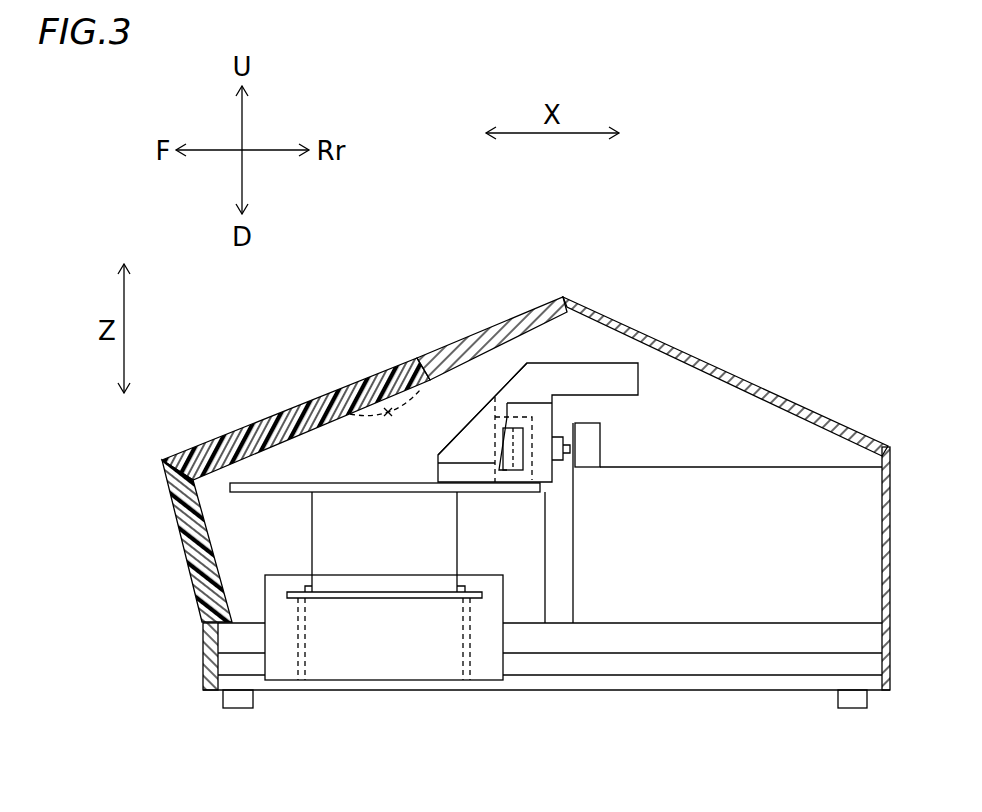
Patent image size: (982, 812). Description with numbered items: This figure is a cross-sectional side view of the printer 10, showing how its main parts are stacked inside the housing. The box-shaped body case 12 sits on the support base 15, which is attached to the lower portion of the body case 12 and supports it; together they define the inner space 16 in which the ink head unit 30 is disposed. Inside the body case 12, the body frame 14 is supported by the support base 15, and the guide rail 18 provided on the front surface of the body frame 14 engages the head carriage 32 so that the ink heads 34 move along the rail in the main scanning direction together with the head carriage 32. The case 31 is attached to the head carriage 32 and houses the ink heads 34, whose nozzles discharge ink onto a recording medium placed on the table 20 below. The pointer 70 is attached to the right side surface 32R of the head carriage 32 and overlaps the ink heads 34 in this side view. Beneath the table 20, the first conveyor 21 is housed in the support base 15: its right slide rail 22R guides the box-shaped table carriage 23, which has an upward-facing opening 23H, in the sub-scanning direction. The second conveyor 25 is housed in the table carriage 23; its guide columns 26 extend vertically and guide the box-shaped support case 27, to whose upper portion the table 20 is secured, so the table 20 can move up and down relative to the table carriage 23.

The printer 10 is at (768, 273).
The body case 12 is at (783, 391).
The body frame 14 is at (590, 430).
The support base 15 is at (205, 664).
The inner space 16 is at (332, 394).
The guide rail 18 is at (575, 424).
The table 20 is at (258, 482).
The first conveyor 21 is at (529, 680).
The right slide rail 22R is at (753, 663).
The table carriage 23 is at (262, 640).
The opening 23H is at (318, 588).
The second conveyor 25 is at (298, 530).
The guide columns 26 is at (292, 655).
The support case 27 is at (332, 497).
The ink head unit 30 is at (535, 355).
The case 31 is at (497, 392).
The head carriage 32 is at (548, 483).
The right side surface 32R is at (455, 463).
The ink heads 34 is at (440, 360).
The pointer 70 is at (520, 428).